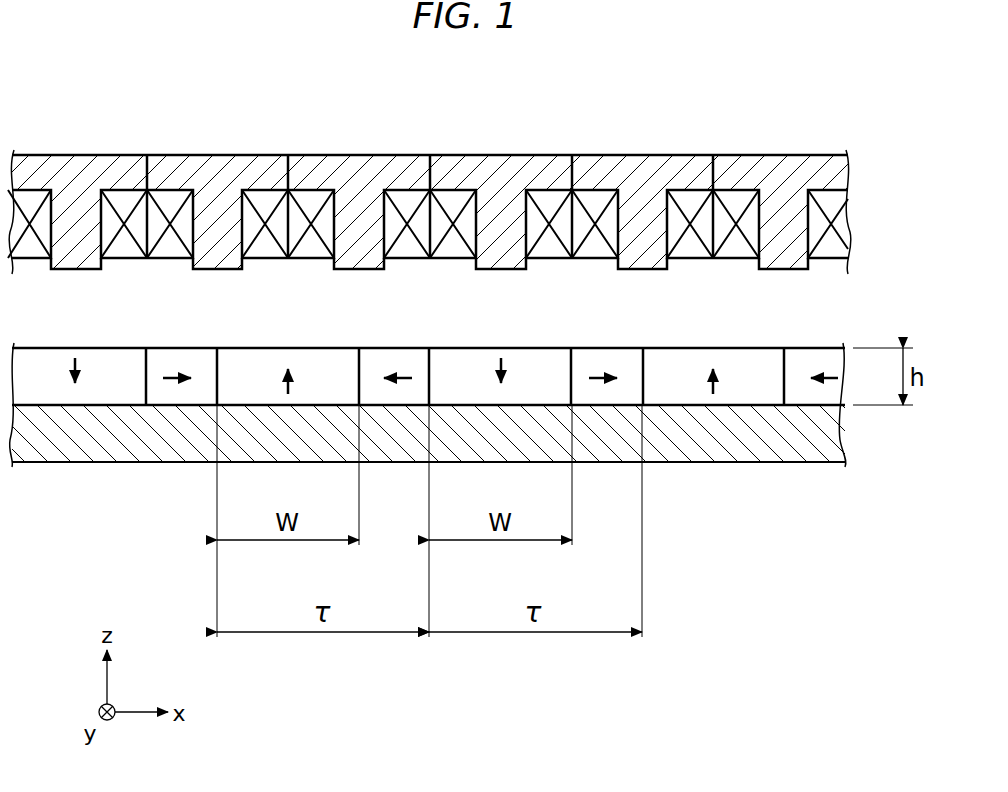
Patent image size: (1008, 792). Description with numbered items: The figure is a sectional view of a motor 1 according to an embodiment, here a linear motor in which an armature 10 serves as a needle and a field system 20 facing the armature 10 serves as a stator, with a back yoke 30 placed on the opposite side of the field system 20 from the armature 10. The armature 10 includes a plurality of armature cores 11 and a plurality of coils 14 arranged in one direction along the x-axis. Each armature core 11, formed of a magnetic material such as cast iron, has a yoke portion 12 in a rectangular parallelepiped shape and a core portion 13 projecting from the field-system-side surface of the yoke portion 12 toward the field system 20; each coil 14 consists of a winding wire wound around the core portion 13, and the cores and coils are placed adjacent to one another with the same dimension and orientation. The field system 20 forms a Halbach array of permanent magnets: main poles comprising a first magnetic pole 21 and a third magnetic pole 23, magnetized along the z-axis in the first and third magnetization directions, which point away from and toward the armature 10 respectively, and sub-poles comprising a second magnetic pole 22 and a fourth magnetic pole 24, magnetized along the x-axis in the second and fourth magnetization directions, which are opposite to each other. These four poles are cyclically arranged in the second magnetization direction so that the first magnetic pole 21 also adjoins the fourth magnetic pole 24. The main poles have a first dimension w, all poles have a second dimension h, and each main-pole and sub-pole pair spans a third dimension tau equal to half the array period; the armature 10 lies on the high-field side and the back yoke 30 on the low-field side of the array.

The motor 1 is at (842, 102).
The armature 10 is at (440, 152).
The armature core 11 is at (237, 155).
The yoke portion 12 is at (186, 162).
The core portion 13 is at (225, 262).
The coil 14 is at (268, 258).
The field system 20 is at (442, 345).
The first magnetic pole 21 is at (103, 347).
The second magnetic pole 22 is at (175, 347).
The third magnetic pole 23 is at (305, 347).
The fourth magnetic pole 24 is at (372, 347).
The back yoke 30 is at (103, 468).